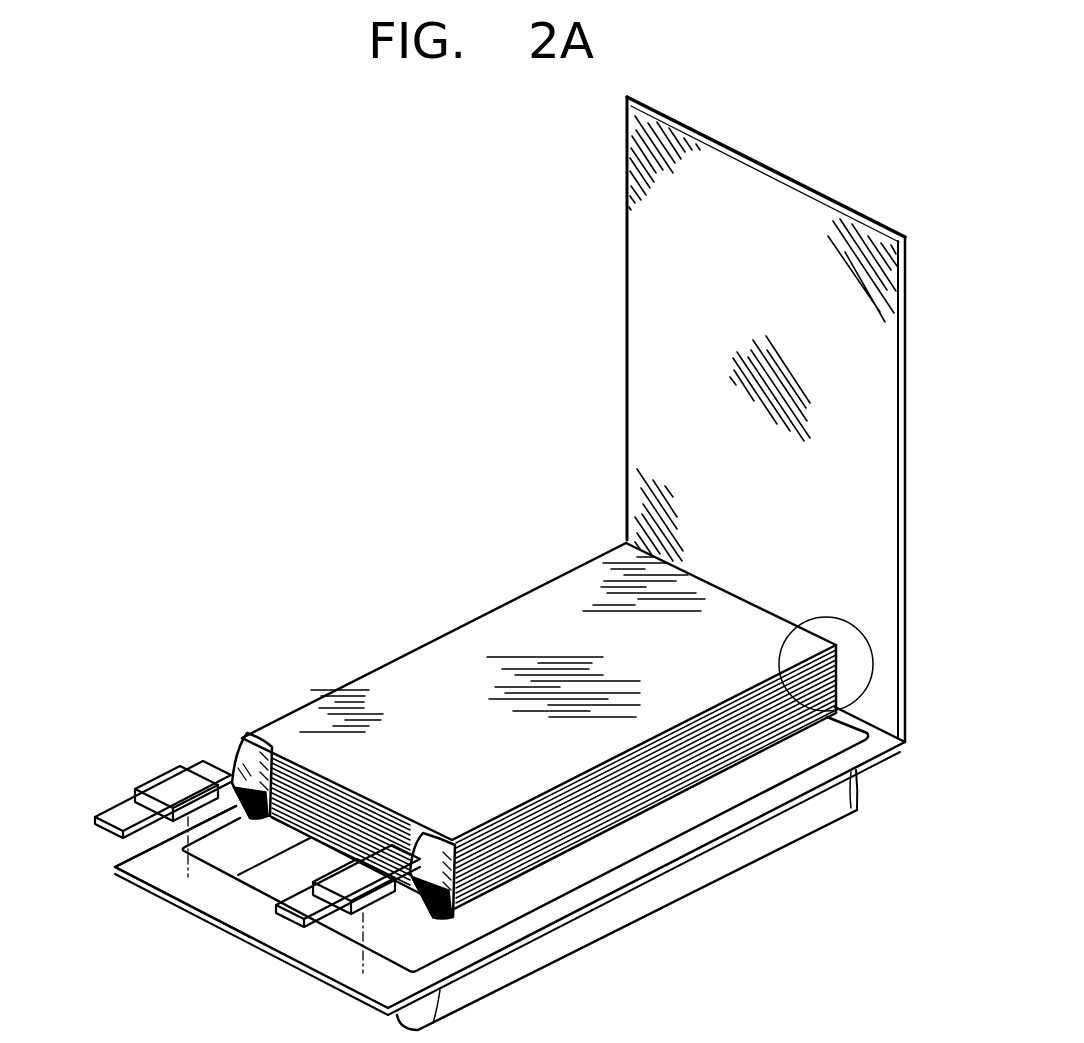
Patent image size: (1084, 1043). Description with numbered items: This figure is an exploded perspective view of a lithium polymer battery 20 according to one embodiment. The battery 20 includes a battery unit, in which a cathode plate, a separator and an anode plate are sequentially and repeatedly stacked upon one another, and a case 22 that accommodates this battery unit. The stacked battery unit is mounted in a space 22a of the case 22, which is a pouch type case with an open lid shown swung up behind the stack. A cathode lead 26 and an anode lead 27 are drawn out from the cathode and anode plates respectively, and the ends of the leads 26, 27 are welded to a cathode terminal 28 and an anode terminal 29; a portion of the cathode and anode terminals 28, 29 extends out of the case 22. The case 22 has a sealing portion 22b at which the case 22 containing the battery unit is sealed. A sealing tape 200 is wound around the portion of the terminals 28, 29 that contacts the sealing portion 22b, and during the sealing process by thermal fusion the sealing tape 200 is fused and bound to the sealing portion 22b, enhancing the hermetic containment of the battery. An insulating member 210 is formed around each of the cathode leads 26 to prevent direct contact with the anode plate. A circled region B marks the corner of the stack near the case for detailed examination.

The lithium polymer battery 20 is at (276, 585).
The case 22 is at (792, 833).
The space 22a is at (645, 845).
The sealing portion 22b is at (213, 893).
The cathode lead 26 is at (259, 733).
The anode lead 27 is at (433, 845).
The cathode terminal 28 is at (113, 815).
The anode terminal 29 is at (272, 908).
The sealing tape 200 is at (163, 787).
The insulating member 210 is at (233, 780).
The detail region B is at (875, 657).